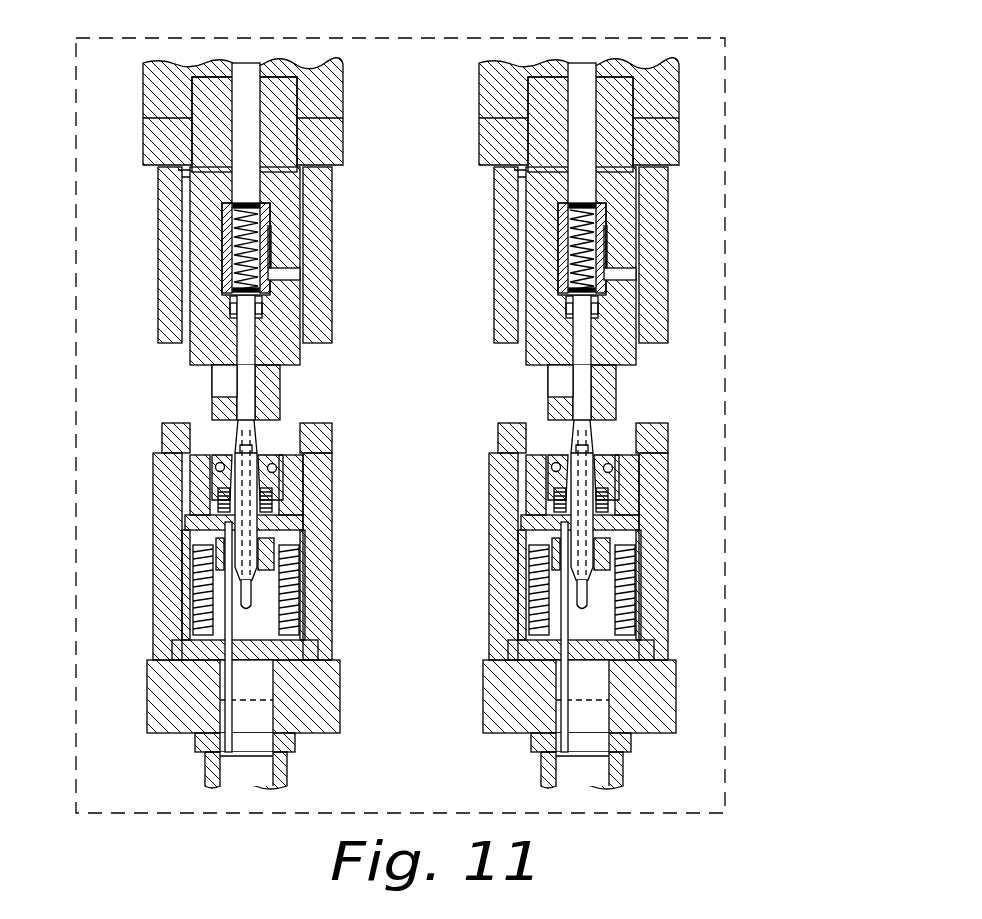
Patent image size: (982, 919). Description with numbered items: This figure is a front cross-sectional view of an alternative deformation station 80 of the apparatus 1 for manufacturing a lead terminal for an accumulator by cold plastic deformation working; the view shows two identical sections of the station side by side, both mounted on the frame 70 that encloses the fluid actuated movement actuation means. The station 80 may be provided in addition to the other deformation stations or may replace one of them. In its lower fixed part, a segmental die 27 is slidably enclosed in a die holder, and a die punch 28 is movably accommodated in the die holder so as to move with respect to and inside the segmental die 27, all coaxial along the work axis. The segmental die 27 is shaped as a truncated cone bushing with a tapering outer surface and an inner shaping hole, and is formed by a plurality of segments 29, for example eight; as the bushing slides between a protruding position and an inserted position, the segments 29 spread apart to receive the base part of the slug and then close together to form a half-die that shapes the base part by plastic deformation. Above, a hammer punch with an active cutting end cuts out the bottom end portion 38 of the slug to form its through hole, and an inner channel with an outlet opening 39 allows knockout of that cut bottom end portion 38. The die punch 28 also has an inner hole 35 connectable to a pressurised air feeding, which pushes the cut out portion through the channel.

The apparatus 1 is at (438, 406).
The segmental die 27 is at (288, 442).
The die punch 28 is at (247, 513).
The segments 29 is at (291, 455).
The inner hole 35 is at (250, 593).
The cut bottom end portion 38 is at (256, 384).
The outlet opening 39 is at (222, 377).
The frame 70 is at (722, 226).
The deformation station 80 is at (130, 76).